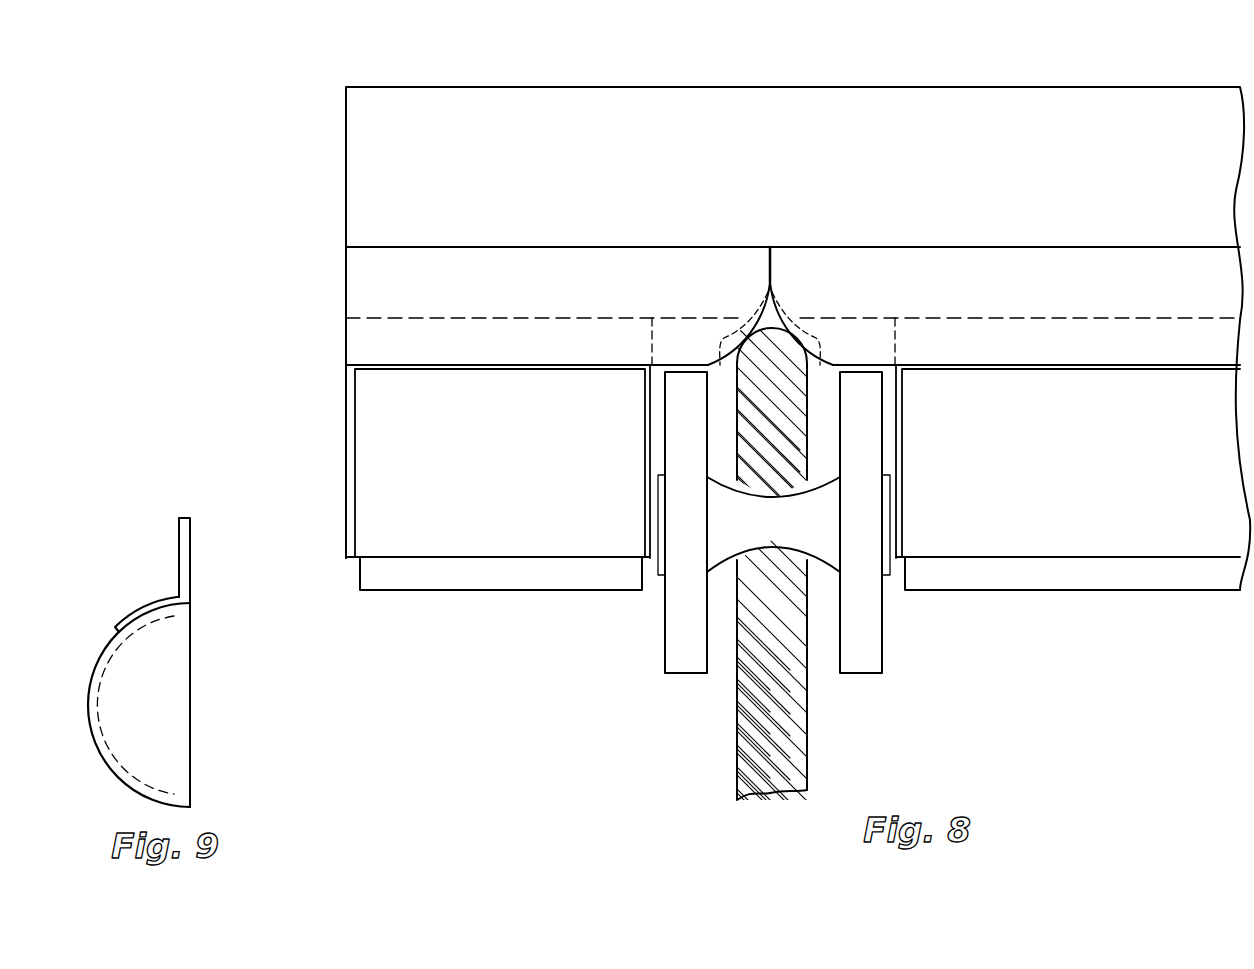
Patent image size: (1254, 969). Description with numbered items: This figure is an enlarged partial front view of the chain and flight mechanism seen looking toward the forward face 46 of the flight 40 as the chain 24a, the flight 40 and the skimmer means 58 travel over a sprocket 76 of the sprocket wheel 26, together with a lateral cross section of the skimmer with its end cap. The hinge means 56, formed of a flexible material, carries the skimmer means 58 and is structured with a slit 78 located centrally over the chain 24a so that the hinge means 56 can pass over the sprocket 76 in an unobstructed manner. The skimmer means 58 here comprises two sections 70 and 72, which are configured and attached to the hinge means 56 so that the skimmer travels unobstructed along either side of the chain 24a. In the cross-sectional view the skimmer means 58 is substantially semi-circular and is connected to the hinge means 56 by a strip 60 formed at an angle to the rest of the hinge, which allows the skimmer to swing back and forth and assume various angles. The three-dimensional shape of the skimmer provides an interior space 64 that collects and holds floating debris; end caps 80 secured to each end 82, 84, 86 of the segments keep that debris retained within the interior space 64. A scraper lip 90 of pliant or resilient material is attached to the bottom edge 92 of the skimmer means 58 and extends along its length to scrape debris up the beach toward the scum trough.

In FIG. 8, the flight 40 is at (720, 128).
In FIG. 8, the forward face 46 is at (401, 152).
In FIG. 8, the hinge means 56 is at (403, 294).
In FIG. 9, the hinge means 56 is at (177, 565).
In FIG. 8, the skimmer means 58 is at (420, 453).
In FIG. 9, the skimmer means 58 is at (98, 748).
In FIG. 9, the strip 60 is at (130, 612).
In FIG. 8, the interior space 64 is at (797, 463).
In FIG. 8, the section of skimmer means 70 is at (552, 616).
In FIG. 8, the section of skimmer means 72 is at (1193, 616).
In FIG. 8, the sprocket 76 is at (770, 355).
In FIG. 8, the slit 78 is at (787, 306).
In FIG. 8, the end cap 80 is at (355, 410).
In FIG. 9, the end cap 80 is at (177, 712).
In FIG. 8, the end of segment 82 is at (350, 569).
In FIG. 8, the end of segment 84 is at (650, 578).
In FIG. 8, the end of segment 86 is at (898, 578).
In FIG. 8, the scraper lip 90 is at (431, 590).
In FIG. 8, the bottom edge 92 is at (503, 548).
In FIG. 8, the chain 24a is at (865, 650).
In FIG. 8, the sprocket wheel 26 is at (782, 722).